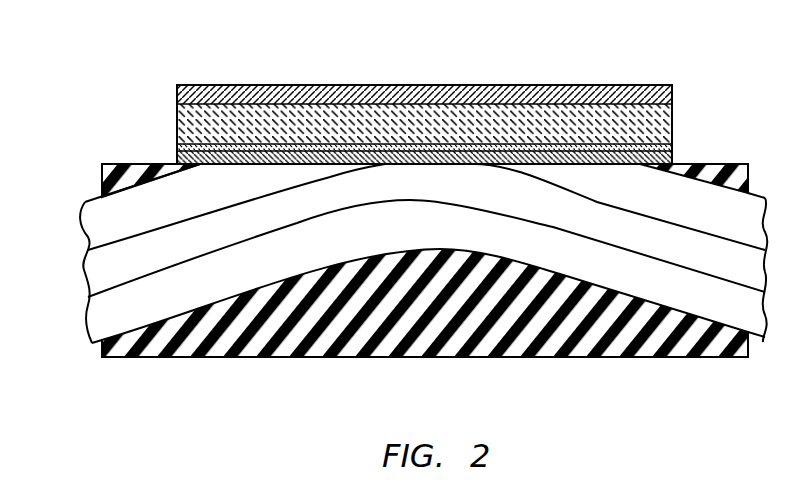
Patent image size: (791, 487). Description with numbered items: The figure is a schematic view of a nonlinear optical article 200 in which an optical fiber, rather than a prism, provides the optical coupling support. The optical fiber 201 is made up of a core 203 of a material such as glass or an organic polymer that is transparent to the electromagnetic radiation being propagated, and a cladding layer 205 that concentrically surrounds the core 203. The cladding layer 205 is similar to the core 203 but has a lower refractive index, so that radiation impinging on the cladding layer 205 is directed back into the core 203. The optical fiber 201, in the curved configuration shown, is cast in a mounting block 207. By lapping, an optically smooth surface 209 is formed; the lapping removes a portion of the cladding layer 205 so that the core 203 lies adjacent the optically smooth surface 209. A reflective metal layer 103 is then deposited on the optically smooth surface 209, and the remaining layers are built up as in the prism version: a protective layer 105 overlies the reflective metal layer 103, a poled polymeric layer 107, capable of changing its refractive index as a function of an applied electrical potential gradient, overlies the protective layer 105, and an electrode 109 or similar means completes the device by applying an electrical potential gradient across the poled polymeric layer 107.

The optical article 200 is at (123, 20).
The electrode 109 is at (386, 85).
The poled polymeric layer 107 is at (672, 124).
The protective layer 105 is at (177, 148).
The reflective metal layer 103 is at (672, 158).
The optically smooth surface 209 is at (122, 164).
The cladding layer 205 is at (158, 219).
The core 203 is at (191, 256).
The optical fiber 201 is at (93, 345).
The mounting block 207 is at (331, 356).